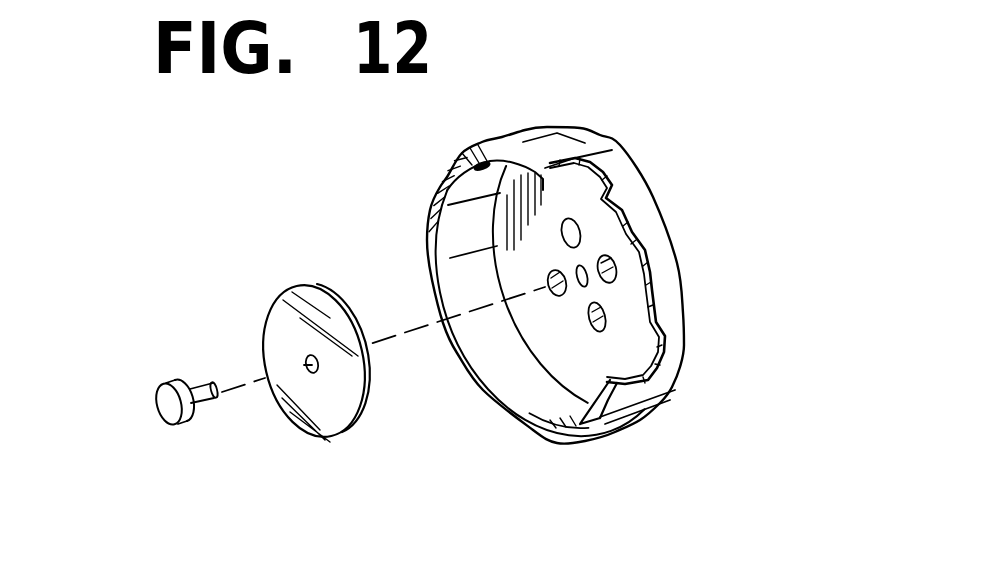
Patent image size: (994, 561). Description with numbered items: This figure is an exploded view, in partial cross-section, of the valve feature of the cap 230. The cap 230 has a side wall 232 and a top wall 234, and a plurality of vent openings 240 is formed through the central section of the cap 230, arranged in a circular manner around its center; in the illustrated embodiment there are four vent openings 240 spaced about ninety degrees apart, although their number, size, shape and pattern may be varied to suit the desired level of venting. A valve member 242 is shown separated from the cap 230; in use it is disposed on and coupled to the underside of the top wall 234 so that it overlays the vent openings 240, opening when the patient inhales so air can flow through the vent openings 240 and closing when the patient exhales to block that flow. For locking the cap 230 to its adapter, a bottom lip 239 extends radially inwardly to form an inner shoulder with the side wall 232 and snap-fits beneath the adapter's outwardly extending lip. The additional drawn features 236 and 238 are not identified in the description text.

The cap 230 is at (551, 286).
The side wall 232 is at (540, 400).
The top wall 234 is at (668, 384).
The flange section 236 is at (433, 220).
The side wall 238 is at (436, 292).
The bottom lip 239 is at (481, 165).
The vent openings 240 is at (576, 224).
The valve member 242 is at (285, 323).